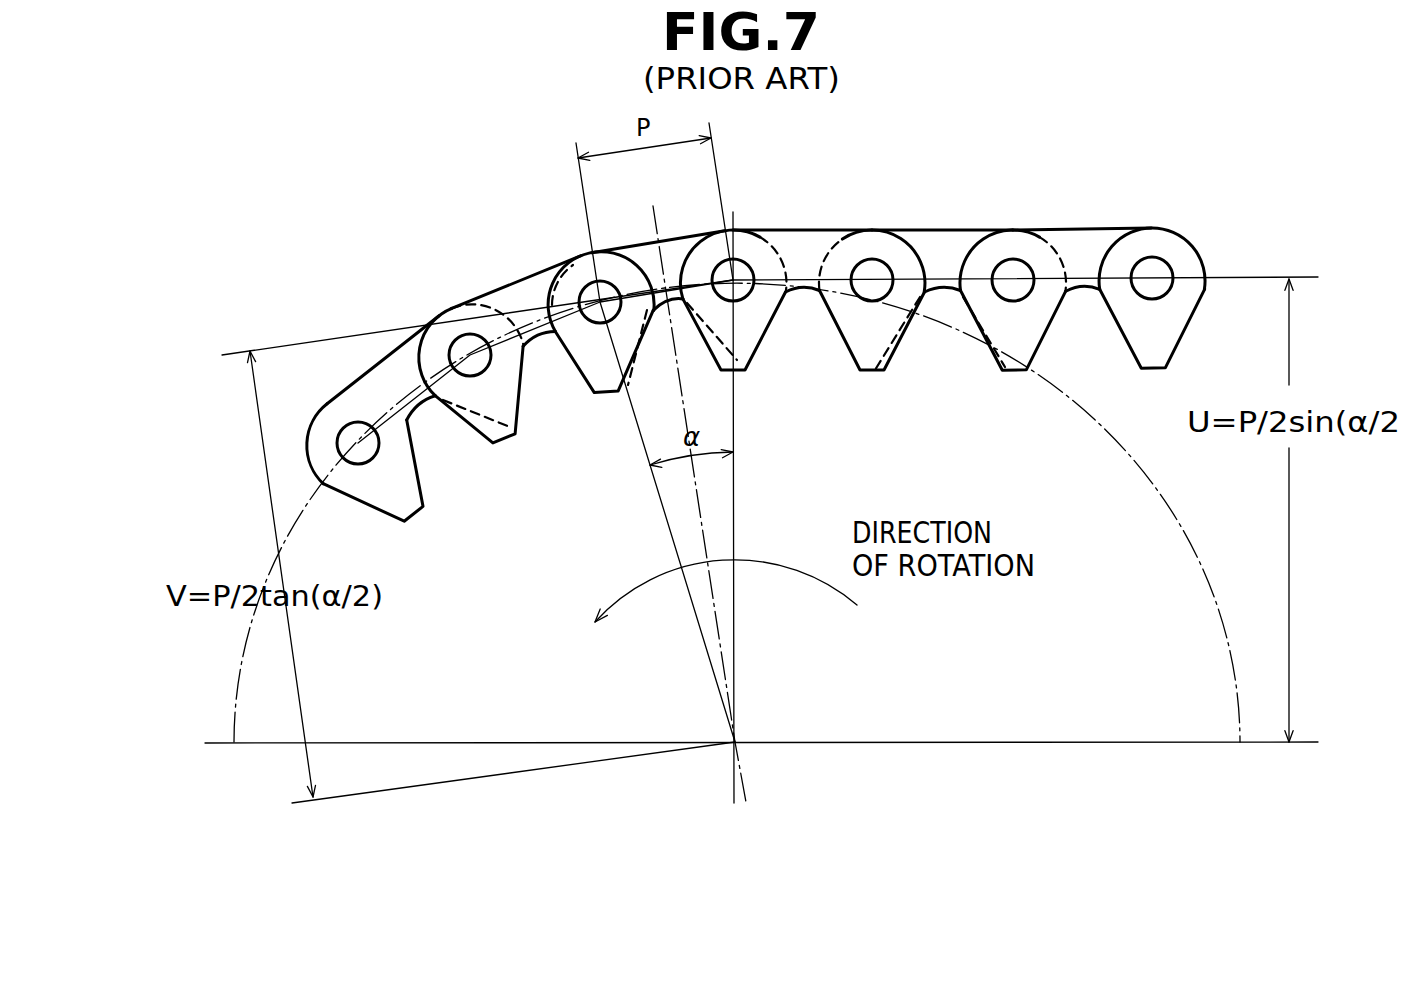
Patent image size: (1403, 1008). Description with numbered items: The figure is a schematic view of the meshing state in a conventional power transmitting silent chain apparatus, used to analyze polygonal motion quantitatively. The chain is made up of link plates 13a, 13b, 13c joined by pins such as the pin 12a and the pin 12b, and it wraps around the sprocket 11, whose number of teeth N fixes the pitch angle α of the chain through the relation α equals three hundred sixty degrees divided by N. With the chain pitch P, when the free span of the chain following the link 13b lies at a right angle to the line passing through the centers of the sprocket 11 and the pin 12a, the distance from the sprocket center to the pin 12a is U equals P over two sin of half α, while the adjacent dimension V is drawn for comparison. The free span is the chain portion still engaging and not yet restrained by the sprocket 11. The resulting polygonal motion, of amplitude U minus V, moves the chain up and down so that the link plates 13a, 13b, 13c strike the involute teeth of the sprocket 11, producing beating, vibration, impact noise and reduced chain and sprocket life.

The sprocket 11 is at (1210, 585).
The pin 12a is at (745, 275).
The pin 12b is at (873, 267).
The link plate 13a is at (640, 250).
The link plate 13b is at (807, 243).
The link plate 13c is at (945, 243).